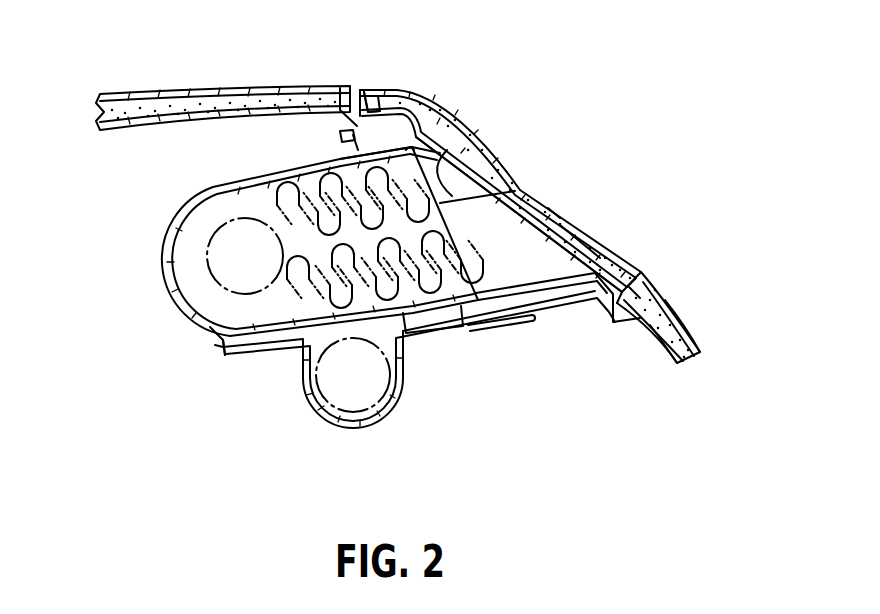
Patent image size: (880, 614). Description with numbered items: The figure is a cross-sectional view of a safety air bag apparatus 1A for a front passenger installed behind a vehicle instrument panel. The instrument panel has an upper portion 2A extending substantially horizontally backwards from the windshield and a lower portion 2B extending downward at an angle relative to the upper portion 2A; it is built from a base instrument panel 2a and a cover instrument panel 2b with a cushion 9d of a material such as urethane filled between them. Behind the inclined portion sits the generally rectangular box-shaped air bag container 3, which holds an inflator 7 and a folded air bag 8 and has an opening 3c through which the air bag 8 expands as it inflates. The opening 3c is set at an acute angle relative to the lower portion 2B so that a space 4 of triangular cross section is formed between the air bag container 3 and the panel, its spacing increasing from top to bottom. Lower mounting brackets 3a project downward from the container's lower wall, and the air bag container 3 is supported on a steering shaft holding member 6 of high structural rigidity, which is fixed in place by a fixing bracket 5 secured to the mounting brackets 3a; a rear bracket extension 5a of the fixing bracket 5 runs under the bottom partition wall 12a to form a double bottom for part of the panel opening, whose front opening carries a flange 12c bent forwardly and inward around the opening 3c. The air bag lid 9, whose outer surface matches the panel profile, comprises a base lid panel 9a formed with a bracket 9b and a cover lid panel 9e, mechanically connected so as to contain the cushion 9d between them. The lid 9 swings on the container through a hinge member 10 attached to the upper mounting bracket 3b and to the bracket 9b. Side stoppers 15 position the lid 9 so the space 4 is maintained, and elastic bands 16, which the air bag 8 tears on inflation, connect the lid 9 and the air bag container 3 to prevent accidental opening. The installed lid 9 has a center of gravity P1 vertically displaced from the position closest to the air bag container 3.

The upper portion of instrument panel 2A is at (296, 88).
The lower portion of instrument panel 2B is at (668, 293).
The base instrument panel 2a is at (665, 355).
The cover instrument panel 2b is at (701, 337).
The air bag lid 9 is at (477, 130).
The base lid panel 9a is at (492, 160).
The bracket 9b is at (411, 100).
The cushion 9d is at (582, 222).
The cover lid panel 9e is at (624, 254).
The center of gravity P1 is at (548, 208).
The air bag container 3 is at (213, 188).
The lower mounting brackets 3a is at (212, 343).
The upper mounting bracket 3b is at (334, 156).
The opening 3c is at (444, 155).
The inflator 7 is at (175, 233).
The air bag 8 is at (301, 260).
The hinge member 10 is at (341, 138).
The side stoppers 15 is at (461, 214).
The elastic bands 16 is at (483, 292).
The bottom partition wall 12a is at (574, 312).
The flange 12c is at (470, 325).
The space 4 is at (532, 282).
The fixing bracket 5 is at (313, 413).
The rear bracket extension 5a is at (490, 333).
The steering shaft holding member 6 is at (348, 424).
The safety air bag apparatus 1A is at (160, 316).